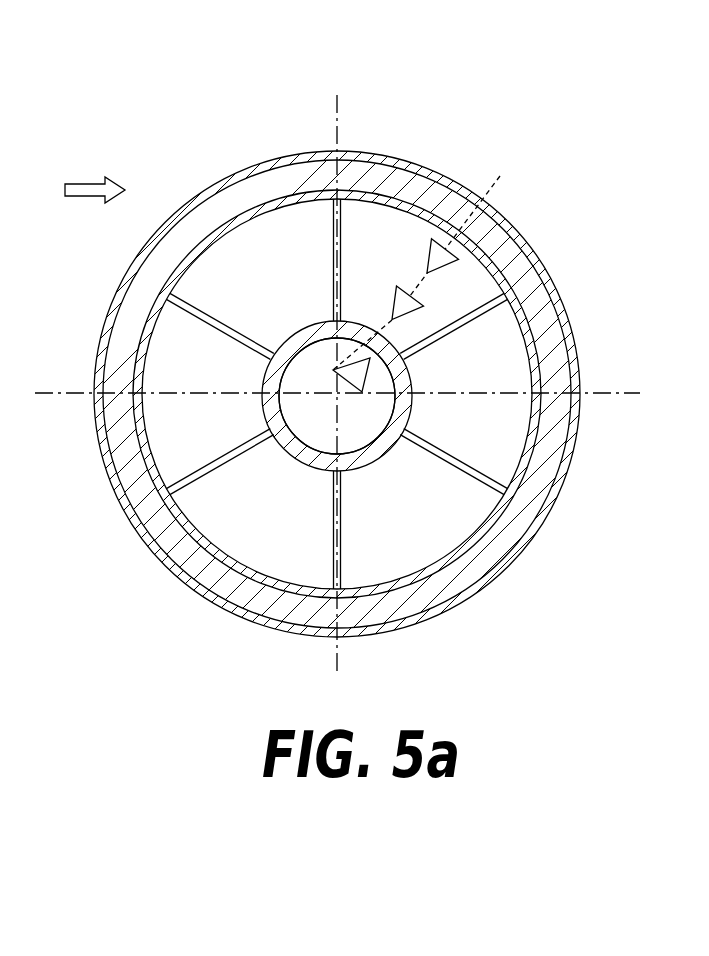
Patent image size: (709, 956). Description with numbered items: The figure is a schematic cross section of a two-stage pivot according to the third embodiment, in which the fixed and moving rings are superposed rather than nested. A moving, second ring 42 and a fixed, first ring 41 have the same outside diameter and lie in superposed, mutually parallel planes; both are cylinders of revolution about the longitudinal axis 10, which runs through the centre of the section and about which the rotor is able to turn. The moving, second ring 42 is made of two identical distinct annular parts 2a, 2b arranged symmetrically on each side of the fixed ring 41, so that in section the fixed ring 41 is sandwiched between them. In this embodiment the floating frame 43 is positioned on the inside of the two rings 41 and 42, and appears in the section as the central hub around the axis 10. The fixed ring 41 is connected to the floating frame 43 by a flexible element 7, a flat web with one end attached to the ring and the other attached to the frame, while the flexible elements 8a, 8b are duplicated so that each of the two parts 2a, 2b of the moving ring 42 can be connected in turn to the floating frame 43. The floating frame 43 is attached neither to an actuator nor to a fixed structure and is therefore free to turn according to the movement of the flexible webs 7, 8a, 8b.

The annular part 2a is at (354, 400).
The annular part 2b is at (240, 617).
The flexible element 7 is at (343, 247).
The flexible element 8a is at (330, 311).
The flexible element 8b is at (213, 303).
The longitudinal axis 10 is at (340, 386).
The fixed first ring 41 is at (520, 513).
The moving second ring 42 is at (550, 283).
The floating frame 43 is at (365, 455).